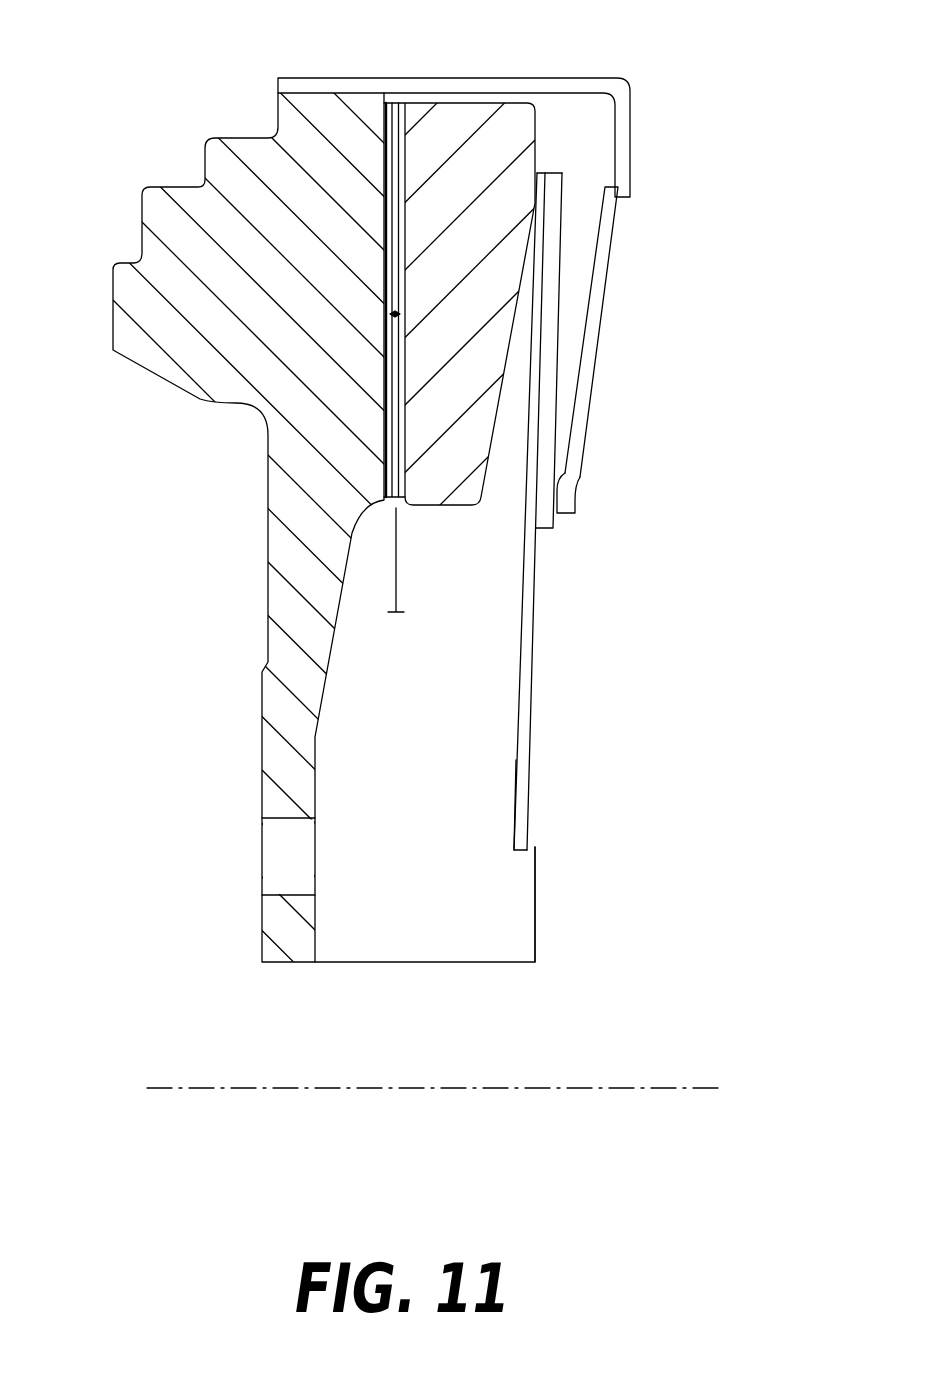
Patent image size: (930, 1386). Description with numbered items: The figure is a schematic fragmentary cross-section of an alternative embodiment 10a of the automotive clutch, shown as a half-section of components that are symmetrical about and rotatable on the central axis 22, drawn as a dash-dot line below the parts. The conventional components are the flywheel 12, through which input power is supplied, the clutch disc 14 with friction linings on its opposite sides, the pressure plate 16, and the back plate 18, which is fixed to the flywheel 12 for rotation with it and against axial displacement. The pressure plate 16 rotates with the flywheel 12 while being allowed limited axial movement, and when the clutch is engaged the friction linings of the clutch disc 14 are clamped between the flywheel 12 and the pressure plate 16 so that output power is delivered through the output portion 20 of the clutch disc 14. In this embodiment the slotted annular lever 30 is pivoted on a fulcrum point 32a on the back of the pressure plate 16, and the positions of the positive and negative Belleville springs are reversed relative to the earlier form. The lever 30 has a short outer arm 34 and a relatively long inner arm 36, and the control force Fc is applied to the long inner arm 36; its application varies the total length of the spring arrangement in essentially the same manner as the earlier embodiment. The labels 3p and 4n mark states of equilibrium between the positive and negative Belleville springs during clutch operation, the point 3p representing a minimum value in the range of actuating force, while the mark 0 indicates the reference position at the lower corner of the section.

The alternative embodiment of the clutch 10a is at (113, 196).
The flywheel 12 is at (140, 310).
The clutch disc 14 is at (393, 410).
The pressure plate 16 is at (443, 120).
The back plate 18 is at (361, 83).
The output portion 20 is at (390, 594).
The central axis 22 is at (360, 1088).
The lever 30 is at (586, 472).
The fulcrum point 32a is at (533, 220).
The short outer arm 34 is at (540, 188).
The long inner arm 36 is at (523, 787).
The equilibrium point of positive Belleville spring 3p is at (577, 510).
The equilibrium point of negative Belleville spring 4n is at (553, 529).
The control force Fc is at (593, 827).
The origin 0 is at (535, 925).